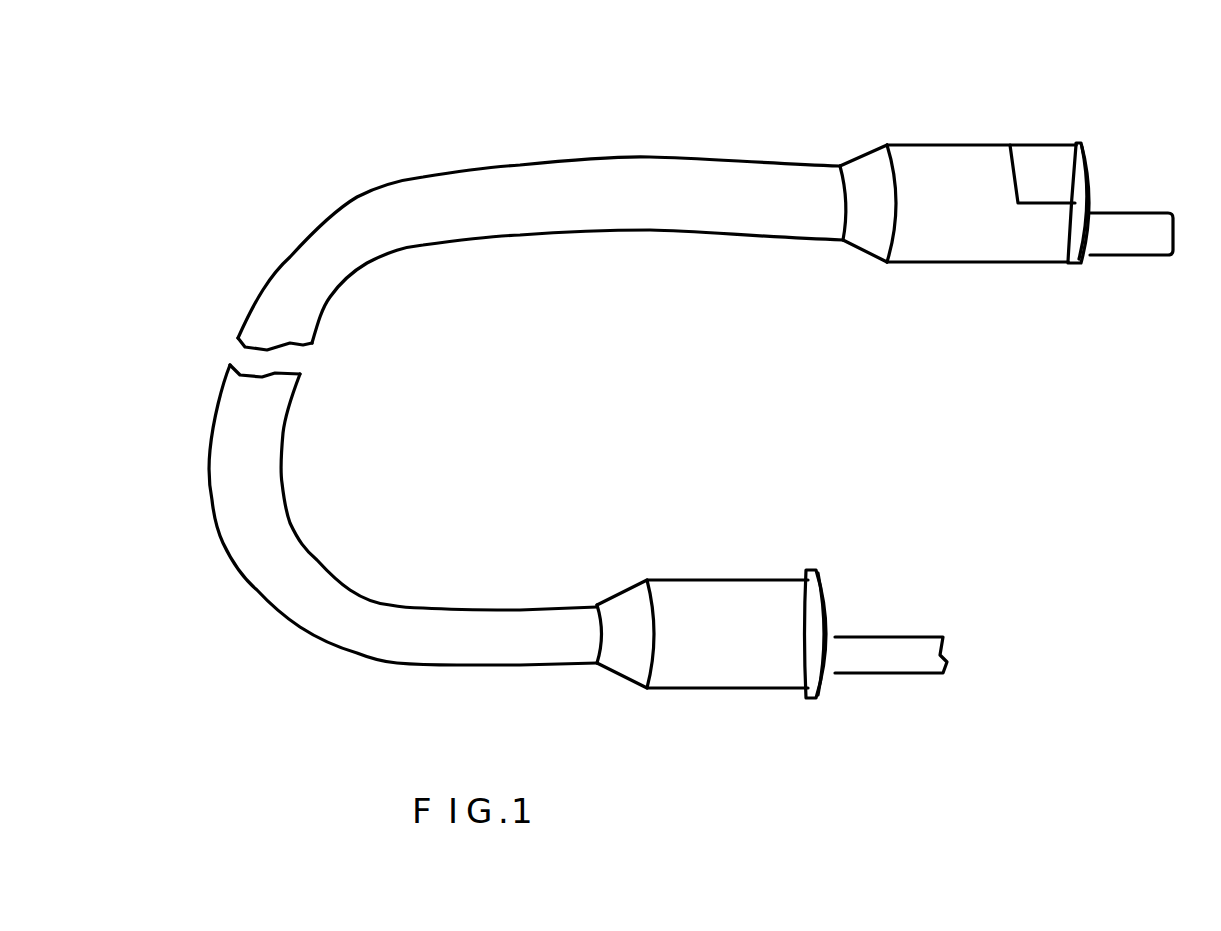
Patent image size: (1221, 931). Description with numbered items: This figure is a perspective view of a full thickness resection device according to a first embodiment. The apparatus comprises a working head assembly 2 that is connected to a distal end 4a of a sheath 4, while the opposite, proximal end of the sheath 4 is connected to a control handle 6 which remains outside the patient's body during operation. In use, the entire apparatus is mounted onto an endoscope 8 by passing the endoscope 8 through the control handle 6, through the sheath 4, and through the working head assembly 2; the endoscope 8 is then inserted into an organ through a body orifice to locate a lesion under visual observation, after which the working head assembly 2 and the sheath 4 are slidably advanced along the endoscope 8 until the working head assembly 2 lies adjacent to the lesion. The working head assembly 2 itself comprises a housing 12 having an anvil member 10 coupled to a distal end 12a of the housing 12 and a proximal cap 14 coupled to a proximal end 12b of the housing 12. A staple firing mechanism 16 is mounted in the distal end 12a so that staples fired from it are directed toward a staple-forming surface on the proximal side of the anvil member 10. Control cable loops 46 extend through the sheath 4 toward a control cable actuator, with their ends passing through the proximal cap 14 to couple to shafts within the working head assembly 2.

The working head assembly 2 is at (974, 210).
The sheath 4 is at (322, 247).
The distal end of the sheath 4a is at (838, 163).
The control handle 6 is at (674, 581).
The endoscope 8 is at (1133, 243).
The anvil member 10 is at (1083, 157).
The housing 12 is at (960, 160).
The distal end of the housing 12a is at (1058, 265).
The proximal end of the housing 12b is at (890, 143).
The proximal cap 14 is at (868, 241).
The staple firing mechanism 16 is at (1042, 155).
The control cable loops 46 is at (597, 603).